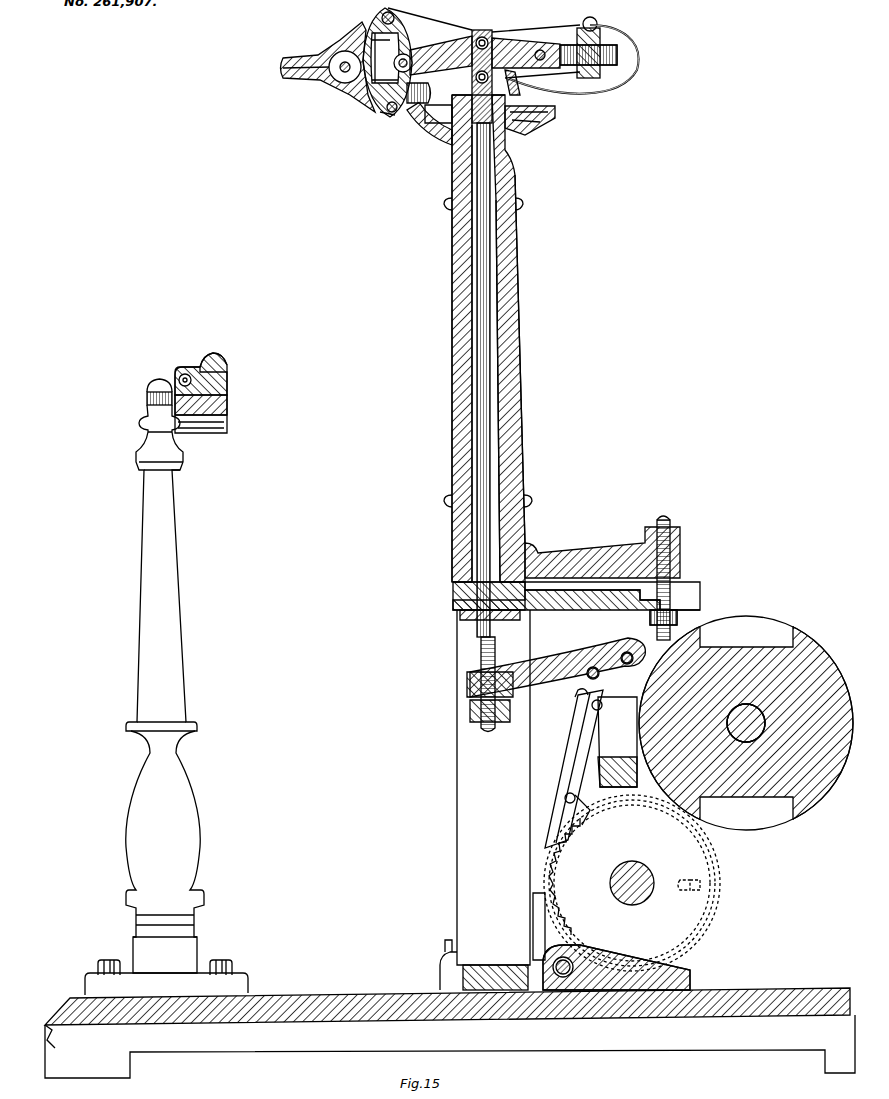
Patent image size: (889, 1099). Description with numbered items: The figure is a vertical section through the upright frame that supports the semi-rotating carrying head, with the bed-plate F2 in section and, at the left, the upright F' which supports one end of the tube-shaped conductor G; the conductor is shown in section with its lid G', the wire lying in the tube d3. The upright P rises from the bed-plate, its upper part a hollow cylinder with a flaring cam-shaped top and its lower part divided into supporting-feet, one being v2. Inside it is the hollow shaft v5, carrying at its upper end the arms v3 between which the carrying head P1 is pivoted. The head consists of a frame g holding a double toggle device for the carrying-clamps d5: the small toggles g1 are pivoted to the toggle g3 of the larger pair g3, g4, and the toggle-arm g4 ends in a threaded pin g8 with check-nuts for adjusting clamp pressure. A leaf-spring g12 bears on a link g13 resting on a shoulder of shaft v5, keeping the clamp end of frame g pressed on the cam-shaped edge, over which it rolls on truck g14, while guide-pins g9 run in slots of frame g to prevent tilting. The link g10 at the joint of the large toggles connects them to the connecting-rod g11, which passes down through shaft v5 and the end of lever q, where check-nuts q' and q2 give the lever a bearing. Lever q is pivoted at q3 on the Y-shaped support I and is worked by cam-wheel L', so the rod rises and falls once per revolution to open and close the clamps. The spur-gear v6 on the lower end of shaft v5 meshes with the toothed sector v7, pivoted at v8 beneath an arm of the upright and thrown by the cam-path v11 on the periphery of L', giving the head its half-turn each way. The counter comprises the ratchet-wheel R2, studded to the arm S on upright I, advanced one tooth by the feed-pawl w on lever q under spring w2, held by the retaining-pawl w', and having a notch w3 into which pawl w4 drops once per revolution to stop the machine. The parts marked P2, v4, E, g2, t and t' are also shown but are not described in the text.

The bed-plate F2 is at (450, 1019).
The upright F' is at (165, 676).
The conductor G is at (214, 400).
The lid G' is at (217, 371).
The tube d3 is at (213, 353).
The upright P is at (520, 440).
The hollow shaft v5 is at (504, 362).
The connecting-rod g11 is at (488, 285).
The link g10 is at (484, 76).
The arms v3 is at (440, 150).
The arm v4 is at (602, 552).
The toothed sector v7 is at (590, 600).
The spur-gear v6 is at (453, 598).
The pivot v8 is at (660, 620).
The supporting-foot v2 is at (485, 800).
The check-nut q' is at (465, 686).
The check-nut q2 is at (470, 712).
The pivot q3 is at (628, 644).
The cam-wheel L' is at (746, 723).
The shaft E is at (746, 723).
The cam-path v11 is at (746, 722).
The Y-shaped support I is at (617, 742).
The feed-pawl w is at (566, 769).
The retaining-pawl w' is at (599, 737).
The spring w2 is at (576, 705).
The pivot t' is at (555, 798).
The pawl t is at (588, 806).
The ratchet-wheel R2 is at (632, 883).
The arm S is at (632, 883).
The notch w3 is at (700, 885).
The pawl w4 is at (610, 934).
The carrying-clamps d5 is at (345, 52).
The frame g is at (401, 62).
The small toggles g1 is at (394, 16).
The pivot g2 is at (388, 112).
The toggle g3 is at (480, 36).
The guide-pins g9 is at (430, 95).
The truck g14 is at (400, 115).
The lever P2 is at (430, 41).
The carrying and depositing head P1 is at (536, 43).
The toggle-arm g4 is at (540, 50).
The lever q is at (568, 49).
The threaded pin g8 is at (605, 38).
The leaf-spring g12 is at (638, 80).
The link g13 is at (520, 90).